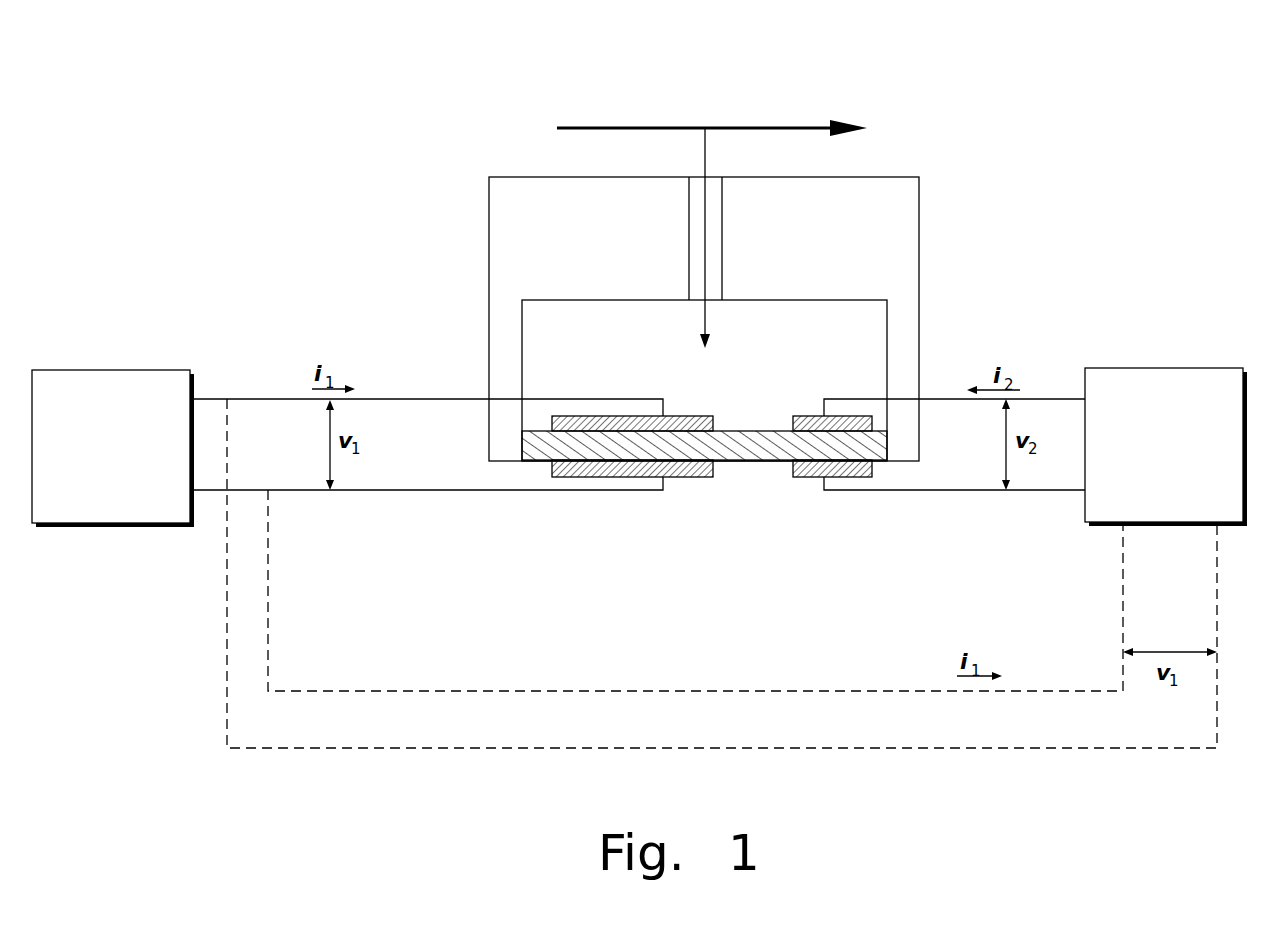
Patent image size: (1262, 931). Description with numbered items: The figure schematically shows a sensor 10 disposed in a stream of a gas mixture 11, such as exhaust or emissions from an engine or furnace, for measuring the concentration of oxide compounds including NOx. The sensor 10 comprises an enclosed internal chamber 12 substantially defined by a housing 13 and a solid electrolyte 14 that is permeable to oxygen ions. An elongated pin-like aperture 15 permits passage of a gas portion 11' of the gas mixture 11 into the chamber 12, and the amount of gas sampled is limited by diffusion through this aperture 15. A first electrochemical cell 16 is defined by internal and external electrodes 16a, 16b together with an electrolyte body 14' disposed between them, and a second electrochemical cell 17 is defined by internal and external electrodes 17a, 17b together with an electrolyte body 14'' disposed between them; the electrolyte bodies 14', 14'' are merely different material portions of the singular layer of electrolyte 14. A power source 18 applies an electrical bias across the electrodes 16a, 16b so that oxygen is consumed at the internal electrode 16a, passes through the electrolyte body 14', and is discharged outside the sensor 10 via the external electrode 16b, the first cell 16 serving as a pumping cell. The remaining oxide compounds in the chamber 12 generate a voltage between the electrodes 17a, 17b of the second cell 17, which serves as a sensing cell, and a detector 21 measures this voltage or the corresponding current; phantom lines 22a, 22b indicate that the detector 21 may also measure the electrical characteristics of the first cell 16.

The sensor 10 is at (1098, 91).
The gas mixture 11 is at (712, 90).
The gas portion 11' is at (746, 238).
The internal chamber 12 is at (852, 347).
The housing 13 is at (905, 307).
The solid electrolyte 14 is at (704, 476).
The electrolyte body 14' is at (503, 446).
The electrolyte body 14'' is at (914, 444).
The elongated pin-like aperture 15 is at (713, 207).
The first electrochemical cell 16 is at (609, 463).
The internal electrode 16a is at (702, 413).
The external electrode 16b is at (693, 477).
The second electrochemical cell 17 is at (854, 463).
The internal electrode 17a is at (800, 413).
The external electrode 17b is at (799, 478).
The power source 18 is at (73, 370).
The detector 21 is at (1168, 368).
The phantom line 22a is at (357, 692).
The phantom line 22b is at (367, 748).